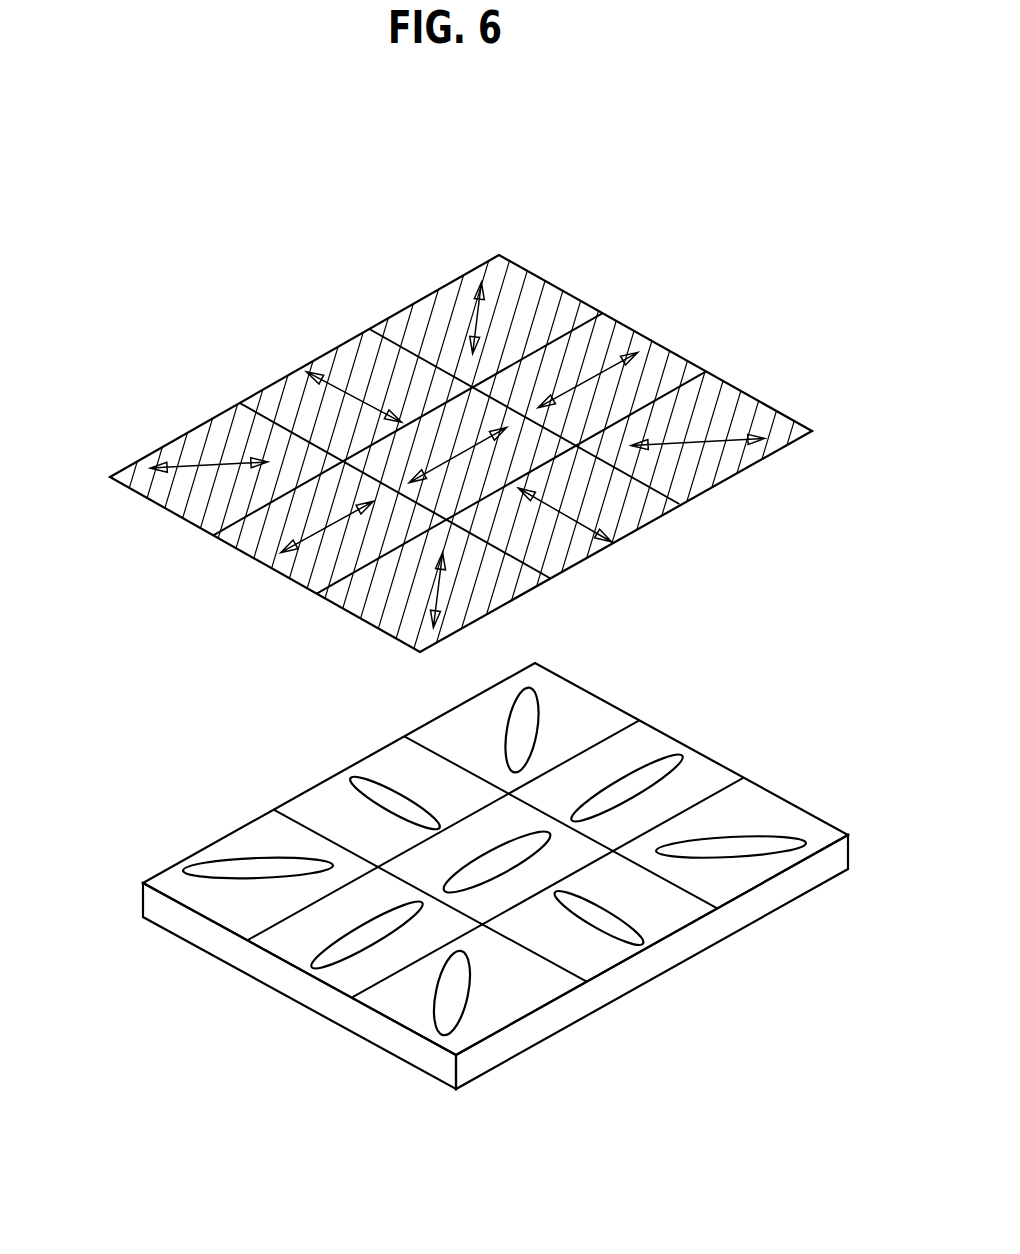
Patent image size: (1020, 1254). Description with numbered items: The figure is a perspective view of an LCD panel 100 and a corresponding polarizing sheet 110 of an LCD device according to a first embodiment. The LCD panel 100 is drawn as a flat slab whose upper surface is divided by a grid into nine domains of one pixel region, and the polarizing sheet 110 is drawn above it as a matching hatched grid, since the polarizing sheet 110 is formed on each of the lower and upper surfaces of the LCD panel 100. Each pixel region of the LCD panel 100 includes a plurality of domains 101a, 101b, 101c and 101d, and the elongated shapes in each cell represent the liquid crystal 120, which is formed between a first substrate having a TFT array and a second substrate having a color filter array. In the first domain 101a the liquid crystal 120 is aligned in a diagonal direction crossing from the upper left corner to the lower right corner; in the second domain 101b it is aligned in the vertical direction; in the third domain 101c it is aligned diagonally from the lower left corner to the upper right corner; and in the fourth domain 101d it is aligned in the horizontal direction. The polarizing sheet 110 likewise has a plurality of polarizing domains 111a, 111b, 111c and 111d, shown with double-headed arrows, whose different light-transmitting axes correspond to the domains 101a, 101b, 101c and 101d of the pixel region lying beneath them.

The LCD panel 100 is at (481, 876).
The first domain 101a is at (535, 1000).
The second domain 101b is at (343, 978).
The third domain 101c is at (225, 903).
The fourth domain 101d is at (327, 805).
The polarizing sheet 110 is at (485, 455).
The first polarizing domain 111a is at (497, 575).
The second polarizing domain 111b is at (312, 567).
The third polarizing domain 111c is at (188, 492).
The fourth polarizing domain 111d is at (298, 387).
The liquid crystal 120 is at (760, 855).